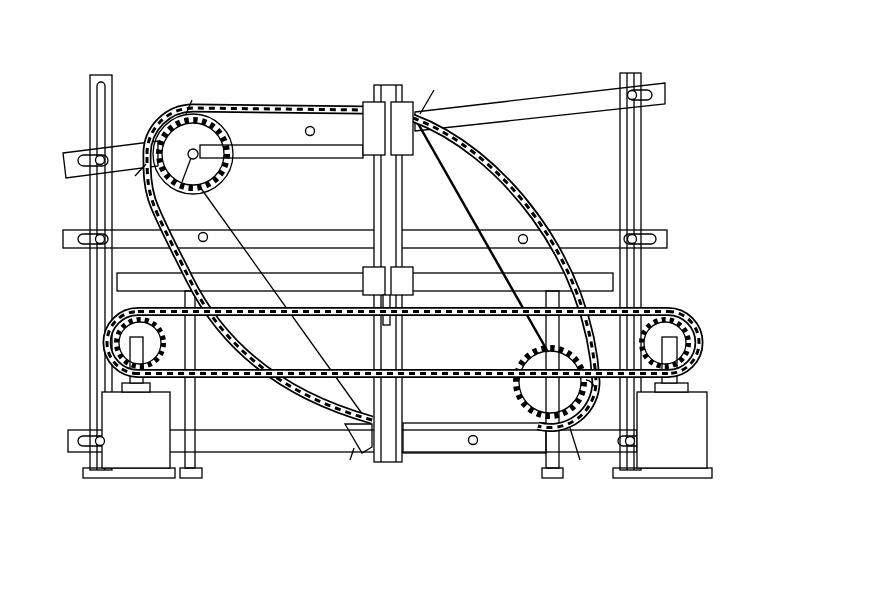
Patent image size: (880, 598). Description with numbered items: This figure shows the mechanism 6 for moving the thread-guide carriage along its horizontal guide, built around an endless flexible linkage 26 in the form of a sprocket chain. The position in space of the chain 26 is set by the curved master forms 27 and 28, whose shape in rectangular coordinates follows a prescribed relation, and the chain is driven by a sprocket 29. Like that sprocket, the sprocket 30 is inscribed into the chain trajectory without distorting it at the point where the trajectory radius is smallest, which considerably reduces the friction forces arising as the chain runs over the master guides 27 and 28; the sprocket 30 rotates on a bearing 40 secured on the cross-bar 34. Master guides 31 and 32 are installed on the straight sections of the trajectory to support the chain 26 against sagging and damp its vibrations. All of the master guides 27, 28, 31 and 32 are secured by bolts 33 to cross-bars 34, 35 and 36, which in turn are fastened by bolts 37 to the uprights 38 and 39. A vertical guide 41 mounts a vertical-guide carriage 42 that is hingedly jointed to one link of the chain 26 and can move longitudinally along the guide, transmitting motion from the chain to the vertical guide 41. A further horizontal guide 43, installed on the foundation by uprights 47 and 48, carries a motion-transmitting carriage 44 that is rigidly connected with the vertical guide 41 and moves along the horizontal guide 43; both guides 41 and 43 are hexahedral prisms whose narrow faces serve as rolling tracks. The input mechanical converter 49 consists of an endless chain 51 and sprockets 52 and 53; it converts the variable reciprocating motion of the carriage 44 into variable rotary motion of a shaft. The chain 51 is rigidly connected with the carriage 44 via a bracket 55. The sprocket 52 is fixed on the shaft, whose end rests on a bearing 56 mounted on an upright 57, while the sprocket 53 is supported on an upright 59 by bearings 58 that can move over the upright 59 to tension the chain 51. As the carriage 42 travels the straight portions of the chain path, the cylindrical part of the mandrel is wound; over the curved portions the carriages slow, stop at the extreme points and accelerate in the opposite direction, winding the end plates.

The mechanism for moving the carriage 6 is at (374, 50).
The endless flexible linkage 26 is at (272, 108).
The master form 27 is at (210, 222).
The master form 28 is at (466, 186).
The sprocket 29 is at (532, 368).
The sprocket 30 is at (174, 130).
The master guide 31 is at (513, 445).
The master guide 32 is at (338, 145).
The bolts 33 is at (312, 126).
The cross-bar 34 is at (481, 104).
The cross-bar 35 is at (574, 232).
The cross-bar 36 is at (300, 440).
The bolts 37 is at (630, 92).
The upright 38 is at (111, 92).
The upright 39 is at (641, 172).
The bearing 40 is at (190, 182).
The vertical guide 41 is at (383, 210).
The vertical-guide carriage 42 is at (404, 104).
The horizontal guide 43 is at (238, 285).
The motion-transmitting carriage 44 is at (403, 296).
The upright 47 is at (195, 415).
The upright 48 is at (546, 346).
The input mechanical converter 49 is at (712, 292).
The endless chain 51 is at (470, 312).
The sprocket 52 is at (118, 328).
The sprocket 53 is at (688, 342).
The bracket 55 is at (383, 318).
The bearing 56 is at (137, 386).
The upright 57 is at (110, 415).
The bearings 58 is at (669, 388).
The upright 59 is at (700, 428).